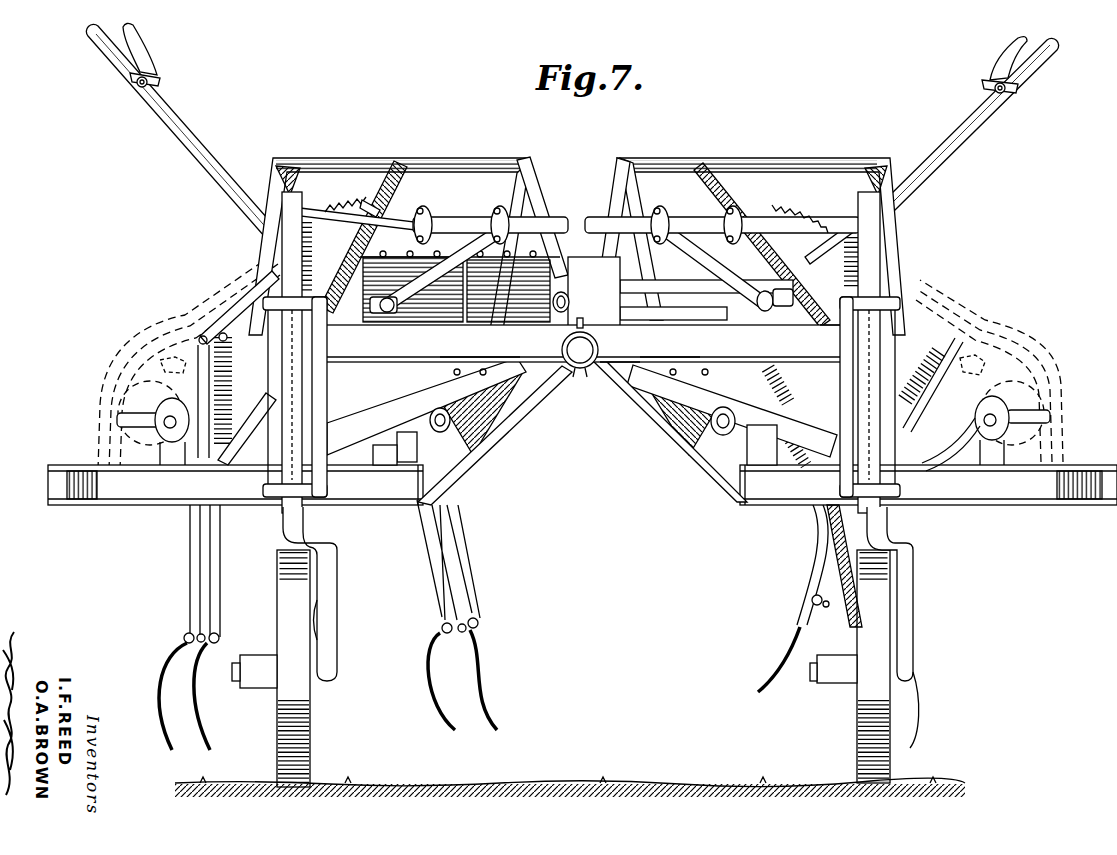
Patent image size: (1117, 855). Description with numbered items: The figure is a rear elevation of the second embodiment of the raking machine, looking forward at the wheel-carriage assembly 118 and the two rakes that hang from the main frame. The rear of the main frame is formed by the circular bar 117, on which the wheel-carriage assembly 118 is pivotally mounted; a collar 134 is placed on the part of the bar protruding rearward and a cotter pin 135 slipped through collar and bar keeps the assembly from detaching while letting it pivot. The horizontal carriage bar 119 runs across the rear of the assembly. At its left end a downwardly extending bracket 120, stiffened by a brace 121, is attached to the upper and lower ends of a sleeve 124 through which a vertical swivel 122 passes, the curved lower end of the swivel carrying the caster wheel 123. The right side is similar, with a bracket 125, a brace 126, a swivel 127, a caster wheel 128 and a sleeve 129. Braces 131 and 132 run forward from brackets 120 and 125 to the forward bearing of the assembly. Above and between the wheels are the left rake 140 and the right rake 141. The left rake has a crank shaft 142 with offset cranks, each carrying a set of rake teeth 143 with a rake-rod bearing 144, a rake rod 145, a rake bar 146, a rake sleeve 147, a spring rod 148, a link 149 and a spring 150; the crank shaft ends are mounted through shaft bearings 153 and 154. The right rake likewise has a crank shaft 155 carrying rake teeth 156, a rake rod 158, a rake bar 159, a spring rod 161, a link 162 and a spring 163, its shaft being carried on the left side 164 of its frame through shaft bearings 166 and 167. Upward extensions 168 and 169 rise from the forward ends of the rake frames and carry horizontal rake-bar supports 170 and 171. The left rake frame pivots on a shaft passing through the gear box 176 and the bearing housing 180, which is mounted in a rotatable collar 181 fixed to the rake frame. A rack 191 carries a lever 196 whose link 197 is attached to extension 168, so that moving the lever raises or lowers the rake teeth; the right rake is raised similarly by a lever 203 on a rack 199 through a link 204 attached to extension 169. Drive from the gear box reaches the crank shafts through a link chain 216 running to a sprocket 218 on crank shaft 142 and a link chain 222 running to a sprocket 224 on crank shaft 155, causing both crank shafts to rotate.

The circular bar 117 is at (570, 363).
The wheel-carriage assembly 118 is at (632, 354).
The horizontal carriage bar 119 is at (587, 343).
The downwardly extending bracket 120 is at (320, 393).
The brace 121 is at (426, 406).
The vertical swivel 122 is at (337, 637).
The caster wheel 123 is at (277, 593).
The sleeve 124 is at (280, 443).
The bracket 125 is at (837, 340).
The brace 126 is at (732, 411).
The swivel 127 is at (913, 587).
The caster wheel 128 is at (855, 722).
The sleeve 129 is at (868, 458).
The brace 131 is at (517, 362).
The brace 132 is at (647, 372).
The collar 134 is at (562, 345).
The cotter pin 135 is at (580, 385).
The left rake 140 is at (410, 156).
The right rake 141 is at (742, 156).
The crank shaft 142 is at (220, 458).
The rake teeth 143 is at (158, 668).
The rake-rod bearing 144 is at (183, 460).
The rake rod 145 is at (192, 572).
The rake bar 146 is at (393, 226).
The rake sleeve 147 is at (185, 633).
The spring rod 148 is at (217, 563).
The link 149 is at (219, 641).
The spring 150 is at (214, 375).
The shaft bearing 153 is at (170, 408).
The shaft bearing 154 is at (422, 443).
The crank shaft 155 is at (950, 437).
The rake teeth 156 is at (772, 673).
The rake rod 158 is at (808, 398).
The rake bar 159 is at (700, 245).
The spring rod 161 is at (812, 550).
The link 162 is at (827, 607).
The spring 163 is at (957, 360).
The left side 164 is at (697, 453).
The shaft bearing 166 is at (740, 445).
The shaft bearing 167 is at (993, 408).
The upward extension 168 is at (540, 178).
The upward extension 169 is at (615, 188).
The horizontal rake-bar support 170 is at (463, 218).
The horizontal rake-bar support 171 is at (697, 216).
The gear box 176 is at (594, 292).
The bearing housing 180 is at (573, 321).
The rotatable collar 181 is at (527, 316).
The rack 191 is at (352, 208).
The lever 196 is at (179, 138).
The link 197 is at (374, 200).
The rack 199 is at (817, 220).
The lever 203 is at (963, 139).
The link 204 is at (757, 187).
The link chain 216 is at (172, 289).
The sprocket 218 is at (120, 366).
The link chain 222 is at (942, 252).
The sprocket 224 is at (1030, 387).